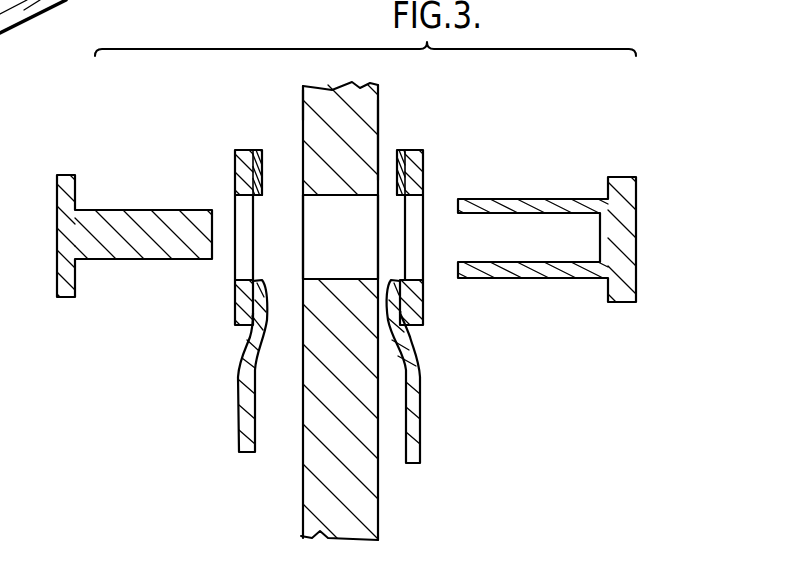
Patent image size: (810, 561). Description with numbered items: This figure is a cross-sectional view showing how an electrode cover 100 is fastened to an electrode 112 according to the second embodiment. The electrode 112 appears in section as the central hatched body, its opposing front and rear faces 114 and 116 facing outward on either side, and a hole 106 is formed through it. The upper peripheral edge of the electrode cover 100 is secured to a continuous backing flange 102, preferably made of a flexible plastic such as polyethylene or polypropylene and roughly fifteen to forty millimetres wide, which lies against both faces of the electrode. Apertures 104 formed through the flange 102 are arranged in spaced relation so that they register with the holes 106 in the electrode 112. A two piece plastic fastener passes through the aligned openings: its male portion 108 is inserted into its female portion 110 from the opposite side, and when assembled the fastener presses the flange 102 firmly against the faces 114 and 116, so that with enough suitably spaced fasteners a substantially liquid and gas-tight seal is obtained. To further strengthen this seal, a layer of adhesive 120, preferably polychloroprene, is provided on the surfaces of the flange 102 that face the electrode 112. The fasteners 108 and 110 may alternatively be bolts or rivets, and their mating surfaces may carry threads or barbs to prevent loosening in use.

The electrode cover 100 is at (238, 422).
The backing flange 102 is at (244, 150).
The apertures 104 is at (233, 260).
The holes 106 is at (306, 217).
The male portion 108 is at (62, 297).
The female portion 110 is at (622, 177).
The electrode 112 is at (357, 80).
The front face 114 is at (303, 103).
The rear face 116 is at (380, 130).
The layer of adhesive 120 is at (256, 195).